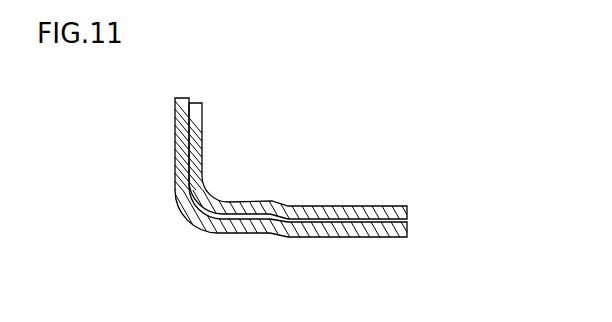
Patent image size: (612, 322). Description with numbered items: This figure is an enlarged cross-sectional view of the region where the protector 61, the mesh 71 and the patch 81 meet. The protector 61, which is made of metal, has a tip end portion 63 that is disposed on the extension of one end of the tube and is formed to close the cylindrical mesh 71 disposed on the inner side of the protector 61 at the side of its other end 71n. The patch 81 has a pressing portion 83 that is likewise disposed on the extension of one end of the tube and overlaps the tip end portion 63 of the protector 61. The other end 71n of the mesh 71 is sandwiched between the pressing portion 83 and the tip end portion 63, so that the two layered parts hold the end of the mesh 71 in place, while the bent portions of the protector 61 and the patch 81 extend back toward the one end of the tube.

The protector 61 is at (160, 119).
The tip end portion 63 is at (232, 225).
The patch 81 is at (218, 117).
The pressing portion 83 is at (237, 212).
The mesh 71 is at (369, 232).
The other end of the mesh 71n is at (258, 217).